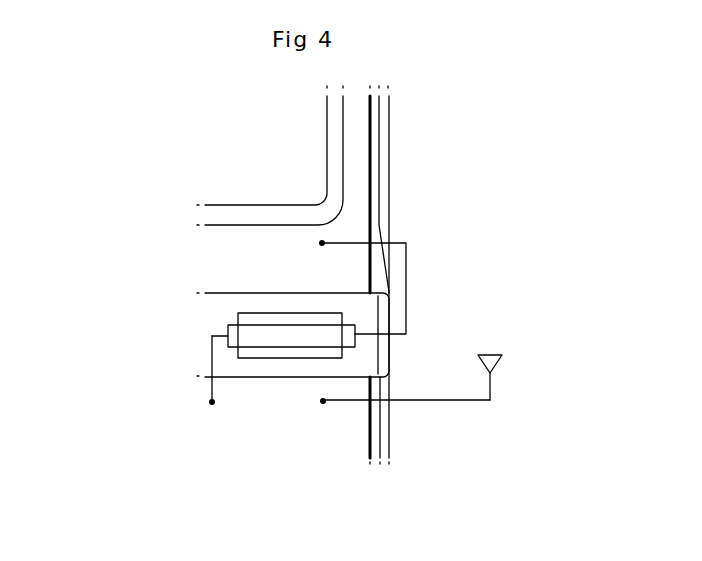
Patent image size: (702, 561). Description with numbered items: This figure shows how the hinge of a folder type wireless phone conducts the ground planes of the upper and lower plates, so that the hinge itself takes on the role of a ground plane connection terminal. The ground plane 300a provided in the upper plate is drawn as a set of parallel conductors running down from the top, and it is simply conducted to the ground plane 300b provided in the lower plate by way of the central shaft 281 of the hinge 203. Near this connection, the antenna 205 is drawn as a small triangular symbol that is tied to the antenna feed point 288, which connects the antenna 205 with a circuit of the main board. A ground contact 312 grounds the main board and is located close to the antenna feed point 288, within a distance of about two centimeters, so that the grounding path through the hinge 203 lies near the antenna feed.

The ground plane provided in the upper plate 300a is at (355, 139).
The ground plane provided in the lower plate 300b is at (363, 443).
The hinge 203 is at (322, 311).
The central shaft 281 is at (253, 333).
The ground contact 312 is at (212, 402).
The antenna feed point 288 is at (323, 401).
The antenna 205 is at (497, 358).